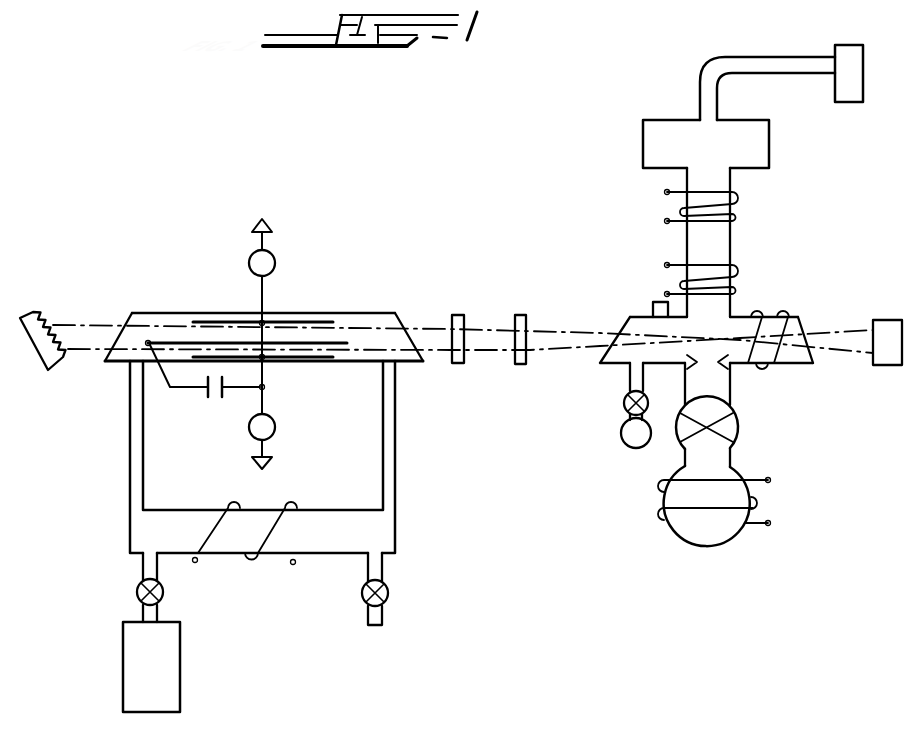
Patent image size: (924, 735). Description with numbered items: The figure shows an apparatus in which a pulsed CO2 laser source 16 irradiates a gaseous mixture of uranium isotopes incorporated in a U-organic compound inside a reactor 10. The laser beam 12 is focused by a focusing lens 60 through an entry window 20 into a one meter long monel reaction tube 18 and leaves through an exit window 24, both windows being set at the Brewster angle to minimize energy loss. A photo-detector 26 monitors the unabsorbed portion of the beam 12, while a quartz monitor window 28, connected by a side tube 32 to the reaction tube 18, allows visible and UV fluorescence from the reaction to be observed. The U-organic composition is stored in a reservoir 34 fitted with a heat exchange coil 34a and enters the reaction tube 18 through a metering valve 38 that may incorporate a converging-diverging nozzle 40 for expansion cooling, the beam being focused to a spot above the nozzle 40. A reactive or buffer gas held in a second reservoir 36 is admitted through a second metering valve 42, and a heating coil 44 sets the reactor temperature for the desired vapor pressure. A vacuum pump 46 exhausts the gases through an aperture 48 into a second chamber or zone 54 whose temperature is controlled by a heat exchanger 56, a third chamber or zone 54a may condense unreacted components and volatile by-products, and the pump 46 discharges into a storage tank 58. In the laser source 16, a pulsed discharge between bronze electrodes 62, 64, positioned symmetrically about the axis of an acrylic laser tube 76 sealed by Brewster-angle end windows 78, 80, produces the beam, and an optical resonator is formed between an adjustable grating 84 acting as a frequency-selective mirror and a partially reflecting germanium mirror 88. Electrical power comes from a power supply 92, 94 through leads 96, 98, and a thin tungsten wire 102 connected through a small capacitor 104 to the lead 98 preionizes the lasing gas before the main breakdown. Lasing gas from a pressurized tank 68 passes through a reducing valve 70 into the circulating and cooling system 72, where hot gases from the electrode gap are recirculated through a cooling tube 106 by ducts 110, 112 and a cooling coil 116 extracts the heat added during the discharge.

The reactor 10 is at (598, 142).
The laser beam 12 is at (80, 325).
The pulsed CO2 laser source 16 is at (307, 227).
The reaction tube 18 is at (636, 316).
The entry window 20 is at (622, 327).
The exit window 24 is at (800, 325).
The photo-detector 26 is at (876, 320).
The monitor window 28 is at (658, 300).
The side tube 32 is at (645, 316).
The reservoir 34 is at (735, 534).
The heat exchange coil 34a is at (752, 480).
The second reservoir 36 is at (621, 433).
The metering valve 38 is at (738, 426).
The converging-diverging nozzle 40 is at (705, 362).
The second metering valve 42 is at (623, 401).
The heating coil 44 is at (777, 353).
The vacuum pump 46 is at (643, 140).
The aperture 48 is at (707, 318).
The second chamber or zone 54 is at (715, 250).
The third chamber or zone 54a is at (683, 213).
The heat exchanger 56 is at (732, 268).
The storage tank 58 is at (863, 70).
The focusing lens 60 is at (527, 316).
The upper bronze electrode 62 is at (217, 322).
The lower bronze electrode 64 is at (320, 357).
The pressurized tank 68 is at (178, 680).
The reducing valve 70 is at (136, 584).
The circulating and cooling system 72 is at (128, 532).
The acrylic laser tube 76 is at (168, 313).
The end window 78 is at (128, 318).
The end window 80 is at (398, 318).
The adjustable grating 84 is at (37, 350).
The germanium mirror 88 is at (465, 316).
The power supply 92 is at (276, 427).
The power supply 94 is at (276, 263).
The lead 96 is at (263, 297).
The lead 98 is at (265, 375).
The tungsten wire 102 is at (328, 343).
The capacitor 104 is at (204, 392).
The cooling tube 106 is at (325, 538).
The duct 110 is at (130, 433).
The duct 112 is at (396, 455).
The cooling coil 116 is at (196, 562).